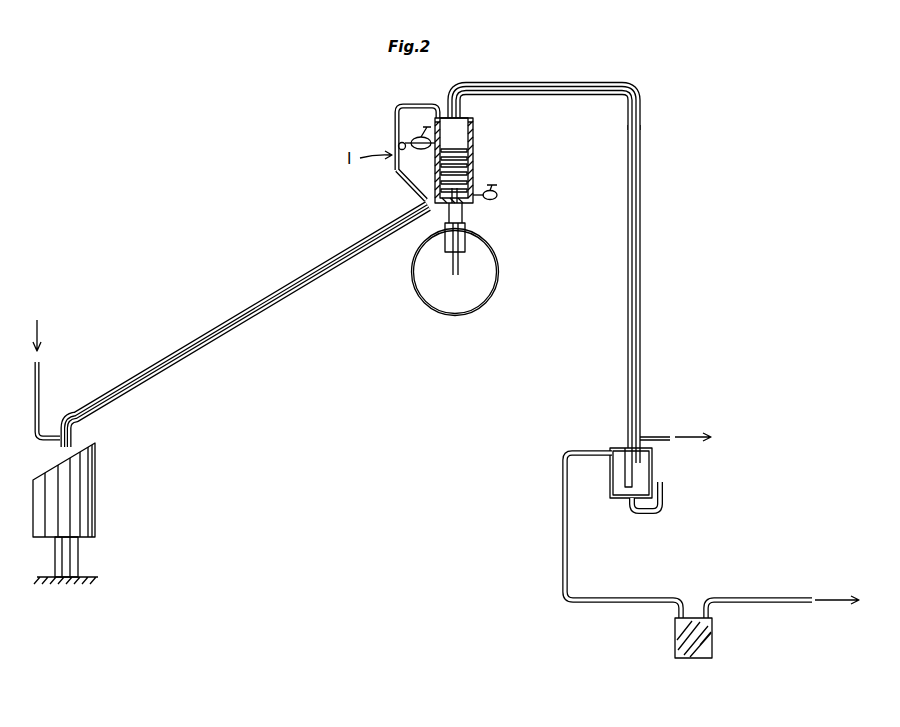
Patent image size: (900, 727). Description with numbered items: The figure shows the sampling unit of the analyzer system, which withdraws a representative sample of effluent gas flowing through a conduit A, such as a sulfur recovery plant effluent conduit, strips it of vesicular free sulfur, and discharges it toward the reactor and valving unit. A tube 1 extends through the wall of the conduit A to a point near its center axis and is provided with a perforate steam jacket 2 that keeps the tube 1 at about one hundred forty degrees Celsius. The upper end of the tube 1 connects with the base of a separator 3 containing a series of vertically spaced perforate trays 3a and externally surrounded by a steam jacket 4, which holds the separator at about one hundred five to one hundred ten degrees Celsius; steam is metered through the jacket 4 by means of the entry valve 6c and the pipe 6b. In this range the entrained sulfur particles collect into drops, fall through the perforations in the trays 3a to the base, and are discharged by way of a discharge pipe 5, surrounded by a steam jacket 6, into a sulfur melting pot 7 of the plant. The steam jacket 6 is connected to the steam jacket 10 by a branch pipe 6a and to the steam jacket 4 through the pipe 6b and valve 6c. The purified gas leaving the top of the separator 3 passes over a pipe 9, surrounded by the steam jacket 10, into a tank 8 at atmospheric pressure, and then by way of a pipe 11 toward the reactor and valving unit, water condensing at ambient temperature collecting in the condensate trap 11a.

The tube 1 is at (463, 212).
The perforate steam jacket 2 is at (466, 244).
The separator 3 is at (474, 130).
The perforate trays 3a is at (461, 158).
The steam jacket 4 is at (475, 176).
The discharge pipe 5 is at (225, 325).
The steam jacket 6 is at (252, 305).
The branch pipe 6a is at (394, 118).
The pipe 6b is at (398, 148).
The entry valve 6c is at (426, 112).
The sulfur melting pot 7 is at (96, 487).
The tank 8 is at (645, 470).
The pipe 9 is at (641, 156).
The steam jacket 10 is at (641, 110).
The pipe 11 is at (567, 554).
The condensate trap 11a is at (674, 640).
The conduit A is at (498, 278).